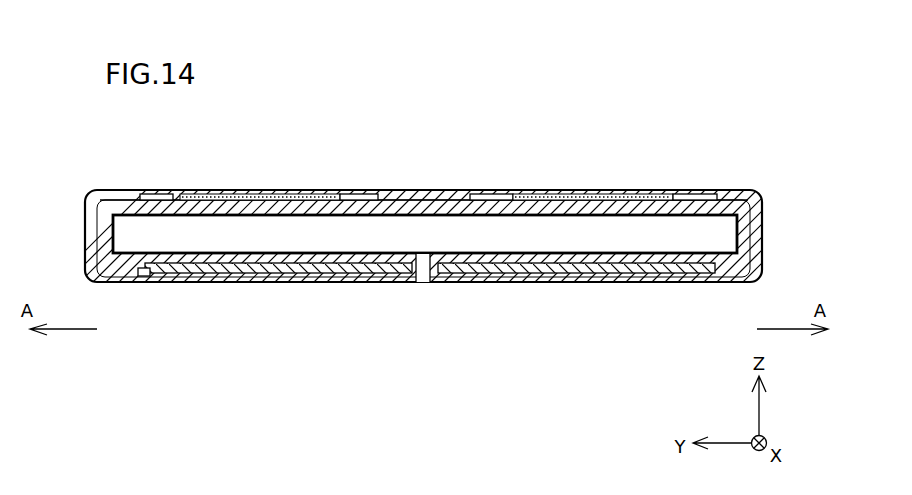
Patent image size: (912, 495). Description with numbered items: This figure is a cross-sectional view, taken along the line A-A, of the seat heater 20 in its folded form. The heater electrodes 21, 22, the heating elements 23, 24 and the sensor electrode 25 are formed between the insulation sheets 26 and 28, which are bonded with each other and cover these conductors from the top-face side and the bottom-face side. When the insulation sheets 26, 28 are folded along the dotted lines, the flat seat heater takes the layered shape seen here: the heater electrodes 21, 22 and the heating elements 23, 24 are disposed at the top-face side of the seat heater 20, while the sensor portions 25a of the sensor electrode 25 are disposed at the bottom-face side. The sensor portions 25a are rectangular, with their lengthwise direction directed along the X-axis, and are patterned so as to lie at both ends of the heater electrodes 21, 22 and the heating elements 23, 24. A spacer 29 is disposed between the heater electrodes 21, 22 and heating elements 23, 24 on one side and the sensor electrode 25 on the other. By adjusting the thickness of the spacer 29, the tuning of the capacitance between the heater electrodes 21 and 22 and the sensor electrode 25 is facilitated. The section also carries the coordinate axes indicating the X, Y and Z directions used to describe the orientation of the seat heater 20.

The seat heater 20 is at (468, 234).
The heater electrode 21 is at (150, 192).
The heater electrode 22 is at (370, 192).
The heating element 23 is at (262, 192).
The heating element 24 is at (608, 192).
The sensor electrode 25 is at (148, 290).
The sensor portion 25a is at (250, 276).
The insulation sheet 26 is at (751, 236).
The insulation sheet 28 is at (763, 203).
The spacer 29 is at (432, 250).